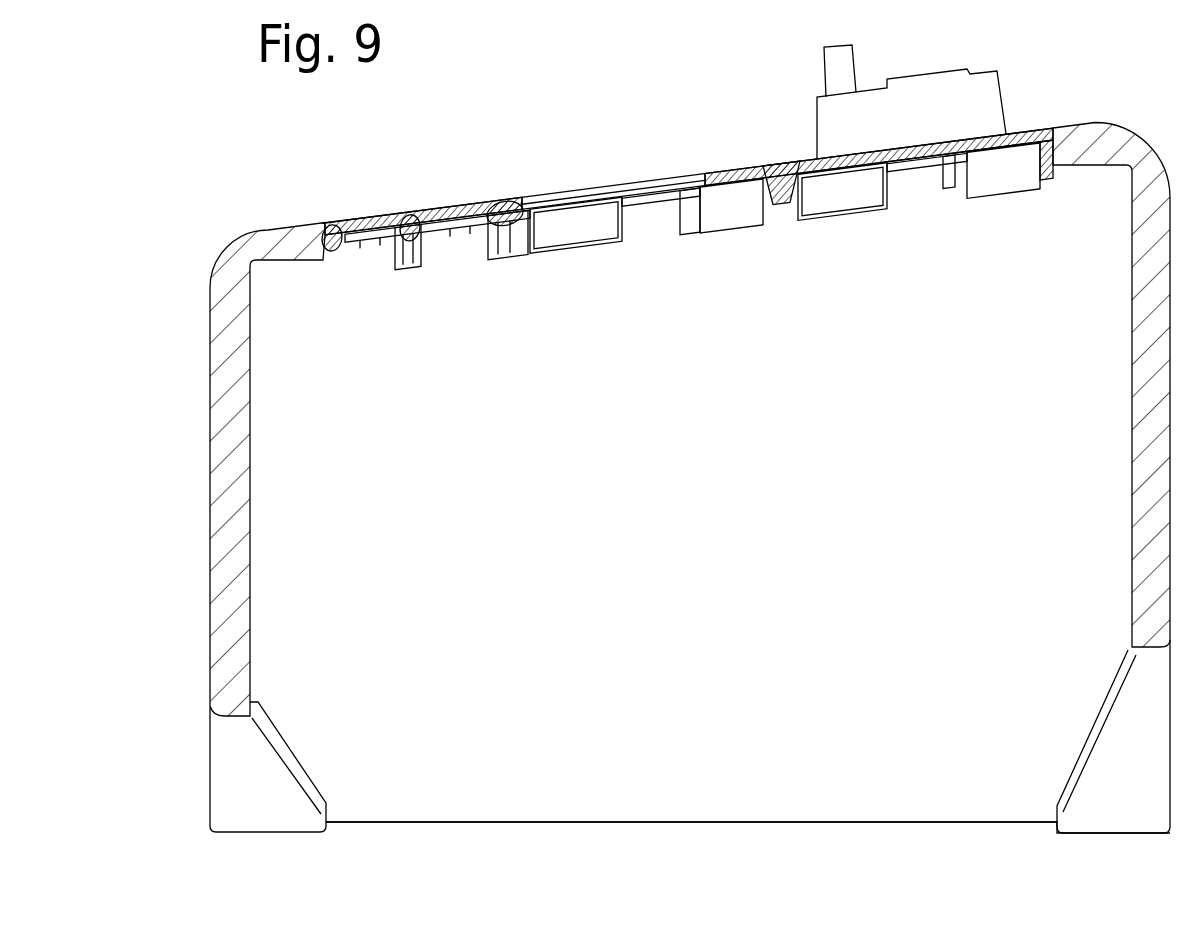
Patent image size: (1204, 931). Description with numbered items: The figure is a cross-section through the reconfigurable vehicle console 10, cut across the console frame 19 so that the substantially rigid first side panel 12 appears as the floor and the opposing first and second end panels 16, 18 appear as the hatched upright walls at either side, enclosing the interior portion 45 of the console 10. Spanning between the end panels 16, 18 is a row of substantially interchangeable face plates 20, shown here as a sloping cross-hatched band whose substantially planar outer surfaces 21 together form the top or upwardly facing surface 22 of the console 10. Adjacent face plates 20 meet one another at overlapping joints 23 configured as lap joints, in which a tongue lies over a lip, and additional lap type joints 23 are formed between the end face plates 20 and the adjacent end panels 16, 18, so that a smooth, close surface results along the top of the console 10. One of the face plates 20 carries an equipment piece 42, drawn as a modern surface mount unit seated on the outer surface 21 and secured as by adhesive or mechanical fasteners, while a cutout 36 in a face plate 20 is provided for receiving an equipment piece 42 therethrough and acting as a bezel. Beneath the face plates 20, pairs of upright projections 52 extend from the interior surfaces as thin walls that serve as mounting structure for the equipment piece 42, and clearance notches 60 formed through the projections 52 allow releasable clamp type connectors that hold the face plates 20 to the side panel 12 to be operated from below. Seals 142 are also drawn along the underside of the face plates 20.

The reconfigurable vehicle console 10 is at (657, 95).
The first side panel 12 is at (408, 823).
The first end panel 16 is at (272, 228).
The second end panel 18 is at (1127, 833).
The console frame 19 is at (210, 318).
The face plates 20 is at (367, 220).
The outer surface 21 is at (1003, 133).
The upwardly facing surface 22 is at (550, 117).
The overlapping joints 23 is at (777, 164).
The cutouts 36 is at (587, 188).
The equipment piece 42 is at (927, 72).
The interior portion 45 is at (640, 594).
The upright projections 52 is at (408, 268).
The clearance notch 60 is at (365, 247).
The seals 142 is at (317, 223).